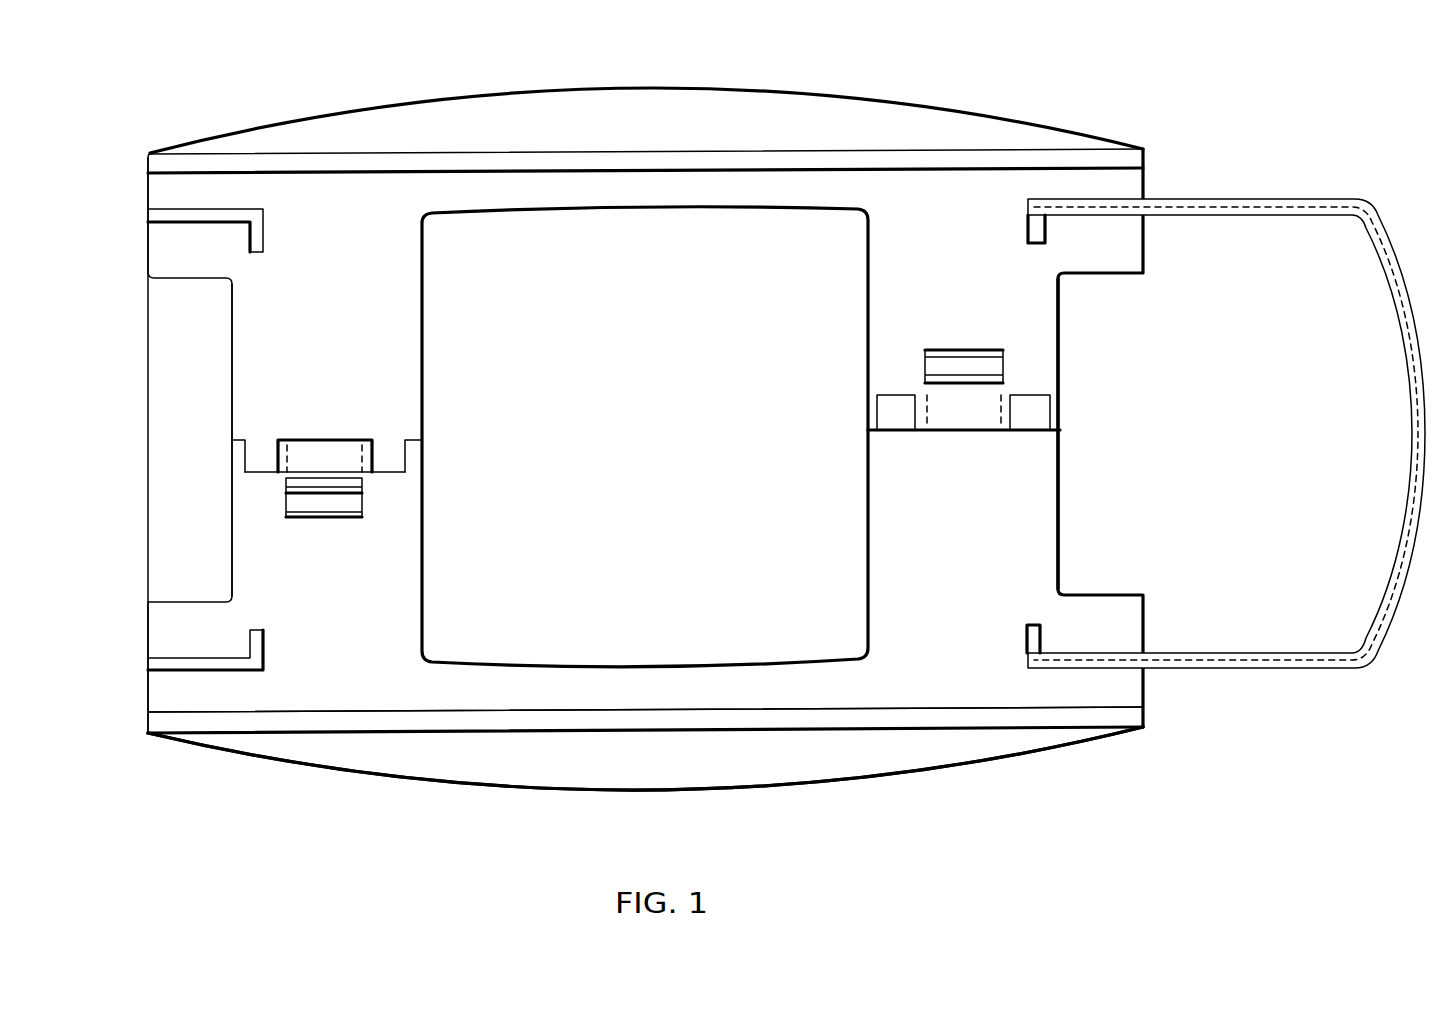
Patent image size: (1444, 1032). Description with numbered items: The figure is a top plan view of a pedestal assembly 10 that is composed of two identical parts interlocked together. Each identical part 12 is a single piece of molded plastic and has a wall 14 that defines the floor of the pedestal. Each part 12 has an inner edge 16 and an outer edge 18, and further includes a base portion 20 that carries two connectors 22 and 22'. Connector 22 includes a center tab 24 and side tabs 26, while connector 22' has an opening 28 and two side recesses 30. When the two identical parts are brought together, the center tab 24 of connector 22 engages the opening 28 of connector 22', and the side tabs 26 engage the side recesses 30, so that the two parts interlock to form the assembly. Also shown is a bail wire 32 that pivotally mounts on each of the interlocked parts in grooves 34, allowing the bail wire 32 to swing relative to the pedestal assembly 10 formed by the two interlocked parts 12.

The pedestal assembly 10 is at (120, 396).
The identical part 12 is at (308, 106).
The wall 14 is at (1130, 715).
The inner edge 16 is at (788, 665).
The outer edge 18 is at (322, 773).
The base portion 20 is at (980, 676).
The connector 22 is at (1087, 434).
The connector 22' is at (203, 440).
The center tab 24 is at (987, 404).
The side tabs 26 is at (890, 417).
The opening 28 is at (362, 512).
The side recesses 30 is at (243, 470).
The bail wire 32 is at (1260, 185).
The grooves 34 is at (248, 645).